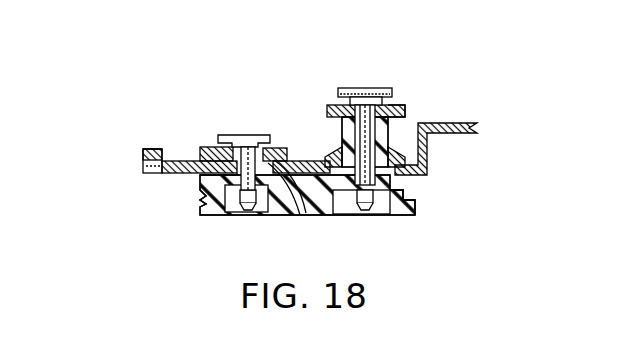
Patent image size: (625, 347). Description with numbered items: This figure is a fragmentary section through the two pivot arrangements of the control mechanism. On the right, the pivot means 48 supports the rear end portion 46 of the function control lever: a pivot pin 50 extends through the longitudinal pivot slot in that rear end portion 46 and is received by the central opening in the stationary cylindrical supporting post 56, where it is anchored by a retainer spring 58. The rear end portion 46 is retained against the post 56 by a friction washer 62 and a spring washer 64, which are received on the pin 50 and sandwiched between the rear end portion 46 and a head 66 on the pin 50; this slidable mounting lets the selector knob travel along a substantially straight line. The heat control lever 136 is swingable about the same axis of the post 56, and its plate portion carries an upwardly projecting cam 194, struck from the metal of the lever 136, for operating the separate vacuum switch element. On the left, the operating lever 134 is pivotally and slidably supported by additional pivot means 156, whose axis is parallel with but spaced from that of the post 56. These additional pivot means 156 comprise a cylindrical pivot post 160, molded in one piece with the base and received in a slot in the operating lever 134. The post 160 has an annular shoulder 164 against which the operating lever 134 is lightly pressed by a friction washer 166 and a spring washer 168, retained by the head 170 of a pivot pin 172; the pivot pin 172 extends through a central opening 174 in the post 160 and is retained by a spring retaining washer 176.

The additional pivot means 156 is at (253, 45).
The operating lever 134 is at (311, 160).
The friction washer 62 is at (335, 112).
The head 66 is at (362, 88).
The pivot means 48 is at (417, 58).
The spring washer 64 is at (392, 98).
The rear end portion 46 is at (407, 113).
The cylindrical supporting post 56 is at (392, 133).
The control lever 136 is at (427, 165).
The pivot pin 50 is at (403, 188).
The retainer spring 58 is at (377, 197).
The pivot pin 172 is at (300, 217).
The spring retaining washer 176 is at (231, 200).
The central opening 174 is at (203, 195).
The cylindrical pivot post 160 is at (203, 182).
The friction washer 166 is at (145, 152).
The cam 194 is at (143, 158).
The spring washer 168 is at (200, 148).
The head 170 is at (217, 146).
The annular shoulder 164 is at (272, 134).